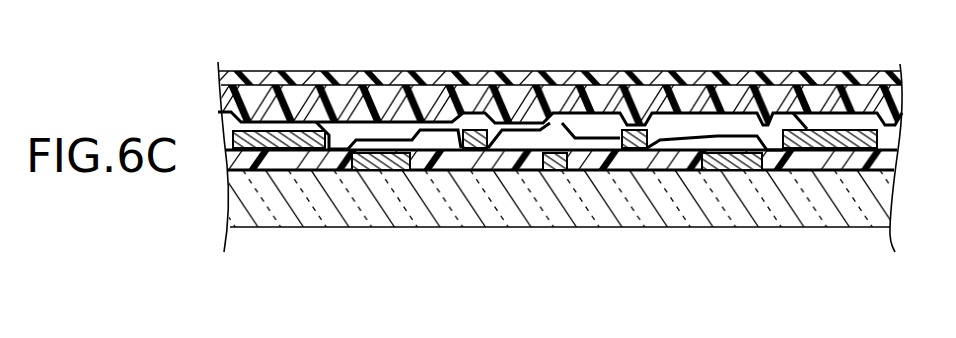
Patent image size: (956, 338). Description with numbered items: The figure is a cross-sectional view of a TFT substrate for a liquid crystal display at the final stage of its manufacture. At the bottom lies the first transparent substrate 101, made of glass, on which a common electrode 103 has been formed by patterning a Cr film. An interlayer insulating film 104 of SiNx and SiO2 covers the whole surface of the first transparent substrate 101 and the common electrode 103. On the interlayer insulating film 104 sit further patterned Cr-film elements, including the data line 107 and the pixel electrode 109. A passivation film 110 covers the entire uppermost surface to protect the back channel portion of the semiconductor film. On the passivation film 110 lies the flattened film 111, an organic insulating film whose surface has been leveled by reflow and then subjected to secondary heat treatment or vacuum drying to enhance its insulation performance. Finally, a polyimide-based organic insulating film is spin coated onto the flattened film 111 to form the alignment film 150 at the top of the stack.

The first transparent substrate 101 is at (292, 208).
The common electrode 103 is at (554, 163).
The interlayer insulating film 104 is at (656, 160).
The data line 107 is at (842, 140).
The pixel electrode 109 is at (470, 143).
The passivation film 110 is at (382, 124).
The flattened film 111 is at (818, 97).
The alignment film 150 is at (661, 78).